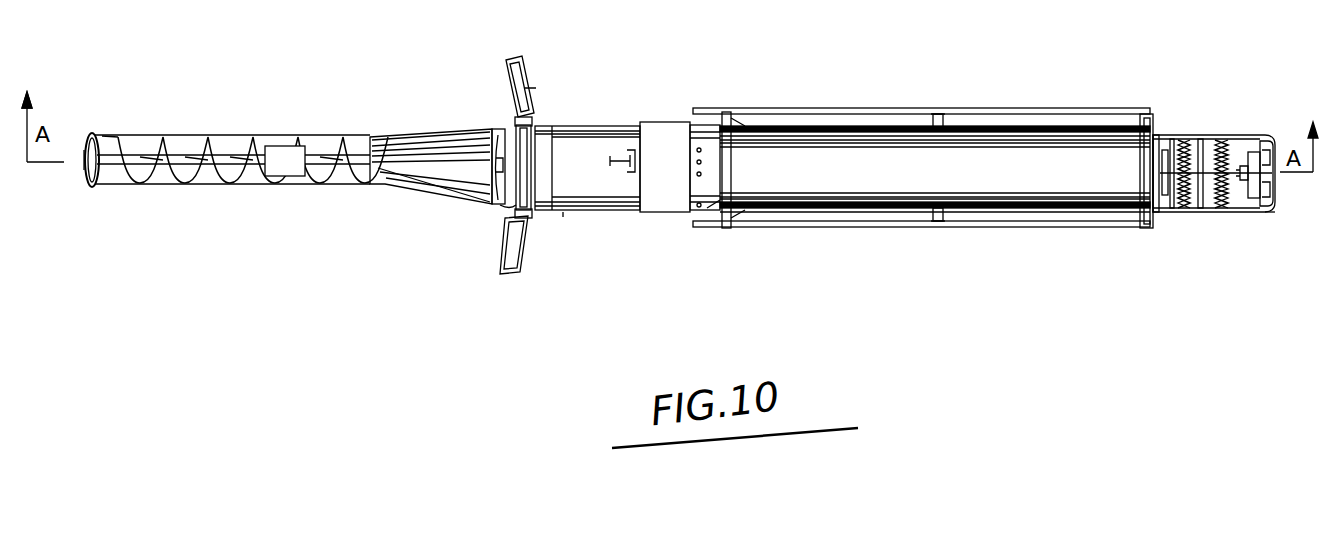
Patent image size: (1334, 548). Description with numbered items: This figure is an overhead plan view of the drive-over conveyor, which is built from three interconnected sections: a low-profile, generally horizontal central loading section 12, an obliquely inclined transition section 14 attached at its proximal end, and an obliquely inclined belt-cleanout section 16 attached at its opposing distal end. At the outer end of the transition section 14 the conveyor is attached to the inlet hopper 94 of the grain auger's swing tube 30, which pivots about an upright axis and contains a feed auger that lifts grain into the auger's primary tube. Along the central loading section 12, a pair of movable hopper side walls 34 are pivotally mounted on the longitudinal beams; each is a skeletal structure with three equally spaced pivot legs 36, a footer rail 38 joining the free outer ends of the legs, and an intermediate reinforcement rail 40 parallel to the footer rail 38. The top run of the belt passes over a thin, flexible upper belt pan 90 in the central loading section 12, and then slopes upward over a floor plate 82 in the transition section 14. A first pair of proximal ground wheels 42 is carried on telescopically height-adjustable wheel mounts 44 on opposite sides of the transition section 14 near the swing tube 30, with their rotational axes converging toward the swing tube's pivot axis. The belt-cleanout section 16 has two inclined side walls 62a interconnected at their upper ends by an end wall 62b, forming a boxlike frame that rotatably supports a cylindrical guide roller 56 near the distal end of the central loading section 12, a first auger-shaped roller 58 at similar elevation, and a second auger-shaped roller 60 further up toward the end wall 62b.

The central loading section 12 is at (982, 157).
The transition section 14 is at (624, 108).
The belt-cleanout section 16 is at (1284, 114).
The swing tube 30 is at (330, 122).
The hopper side wall 34 is at (936, 106).
The pivot leg 36 is at (730, 120).
The footer rail 38 is at (838, 110).
The intermediate reinforcement rail 40 is at (874, 126).
The proximal ground wheel 42 is at (522, 70).
The telescopically height-adjustable wheel mount 44 is at (515, 212).
The guide roller 56 is at (1165, 148).
The first auger-shaped roller 58 is at (1190, 140).
The auger-shaped roller 60 is at (1236, 134).
The side wall 62a is at (1265, 135).
The end wall 62b is at (1272, 208).
The floor plate 82 is at (584, 158).
The upper belt pan 90 is at (1050, 160).
The inlet hopper 94 is at (455, 160).